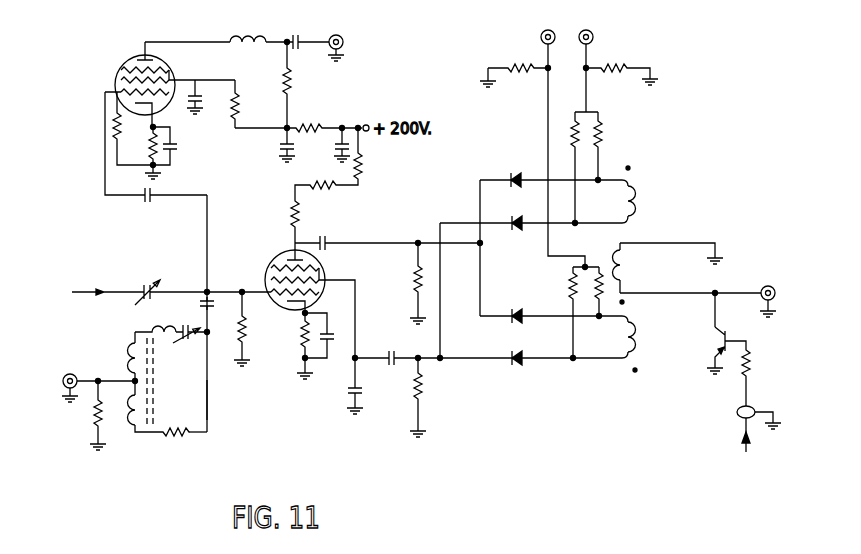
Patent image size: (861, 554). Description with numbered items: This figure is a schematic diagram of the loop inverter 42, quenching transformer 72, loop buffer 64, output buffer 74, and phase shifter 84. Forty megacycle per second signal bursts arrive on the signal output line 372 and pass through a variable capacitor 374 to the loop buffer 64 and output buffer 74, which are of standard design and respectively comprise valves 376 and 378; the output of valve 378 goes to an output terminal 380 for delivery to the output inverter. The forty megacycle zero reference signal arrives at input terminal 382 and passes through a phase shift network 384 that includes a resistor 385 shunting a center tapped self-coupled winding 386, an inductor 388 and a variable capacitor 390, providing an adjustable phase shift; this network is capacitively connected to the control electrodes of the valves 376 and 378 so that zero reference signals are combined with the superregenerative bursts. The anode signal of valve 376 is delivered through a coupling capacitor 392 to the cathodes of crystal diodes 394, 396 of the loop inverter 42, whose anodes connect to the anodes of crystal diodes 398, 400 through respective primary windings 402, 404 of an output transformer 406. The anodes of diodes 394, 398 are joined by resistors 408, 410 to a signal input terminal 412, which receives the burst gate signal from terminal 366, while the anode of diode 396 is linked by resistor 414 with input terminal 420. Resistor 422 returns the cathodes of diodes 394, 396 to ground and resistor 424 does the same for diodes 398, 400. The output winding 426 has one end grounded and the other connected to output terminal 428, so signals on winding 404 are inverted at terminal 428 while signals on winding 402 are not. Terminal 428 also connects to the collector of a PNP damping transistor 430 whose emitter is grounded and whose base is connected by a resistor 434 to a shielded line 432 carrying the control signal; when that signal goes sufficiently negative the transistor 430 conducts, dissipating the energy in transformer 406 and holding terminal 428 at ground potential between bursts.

The output buffer 74 is at (78, 69).
The valve 378 is at (122, 60).
The output terminal 380 is at (341, 35).
The input terminal 420 is at (545, 30).
The signal input terminal 412 is at (593, 30).
The terminal 366 is at (784, 6).
The resistor 410 is at (571, 122).
The resistor 408 is at (604, 134).
The crystal diode 394 is at (518, 172).
The loop inverter 42 is at (468, 125).
The primary winding 402 is at (636, 193).
The output transformer 406 is at (687, 227).
The crystal diode 398 is at (520, 230).
The crystal diode 396 is at (521, 311).
The crystal diode 400 is at (519, 364).
The resistor 414 is at (570, 283).
The output winding 426 is at (632, 278).
The output terminal 428 is at (774, 289).
The primary winding 404 is at (638, 338).
The quenching transformer 72 is at (698, 352).
The damping transistor 430 is at (740, 320).
The resistor 434 is at (752, 367).
The shielded line 432 is at (740, 434).
The resistor 424 is at (413, 402).
The resistor 422 is at (413, 287).
The coupling capacitor 392 is at (330, 244).
The loop buffer 64 is at (264, 242).
The valve 376 is at (266, 276).
The variable capacitor 374 is at (143, 287).
The signal output line 372 is at (84, 293).
The inductor 388 is at (171, 328).
The variable capacitor 390 is at (188, 343).
The input terminal 382 is at (64, 394).
The center tapped self-coupled winding 386 is at (133, 420).
The phase shifter 84 is at (184, 466).
The resistor 385 is at (186, 436).
The phase shift network 384 is at (203, 390).